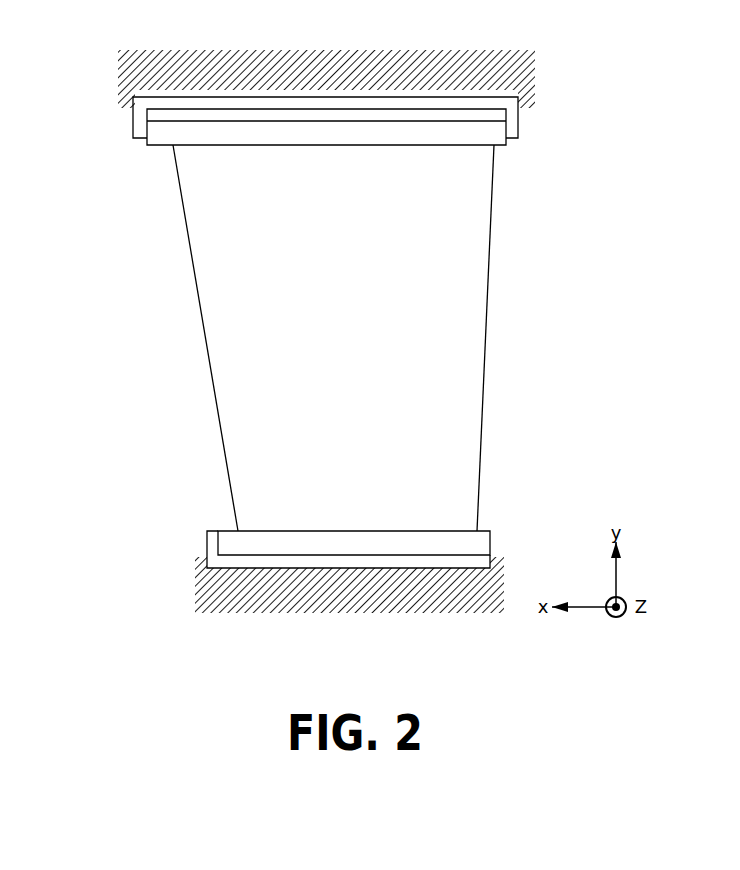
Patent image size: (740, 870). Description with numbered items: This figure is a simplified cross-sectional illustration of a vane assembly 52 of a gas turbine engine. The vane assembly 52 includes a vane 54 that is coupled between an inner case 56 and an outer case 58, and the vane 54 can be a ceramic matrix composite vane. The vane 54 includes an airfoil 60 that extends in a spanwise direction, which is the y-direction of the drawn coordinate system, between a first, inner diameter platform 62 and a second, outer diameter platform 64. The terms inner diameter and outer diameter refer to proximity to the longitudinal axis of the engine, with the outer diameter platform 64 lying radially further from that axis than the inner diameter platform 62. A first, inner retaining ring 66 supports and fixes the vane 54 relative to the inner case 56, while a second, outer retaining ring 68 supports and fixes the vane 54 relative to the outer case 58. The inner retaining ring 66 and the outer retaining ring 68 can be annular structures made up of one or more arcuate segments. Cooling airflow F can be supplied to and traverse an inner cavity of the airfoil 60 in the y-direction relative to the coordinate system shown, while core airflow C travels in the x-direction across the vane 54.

The vane assembly 52 is at (315, 115).
The vane 54 is at (279, 435).
The inner case 56 is at (198, 592).
The outer case 58 is at (532, 80).
The airfoil 60 is at (322, 334).
The inner diameter platform 62 is at (288, 538).
The outer diameter platform 64 is at (193, 137).
The inner retaining ring 66 is at (212, 558).
The outer retaining ring 68 is at (510, 118).
The core airflow C is at (177, 338).
The cooling airflow F is at (335, 170).